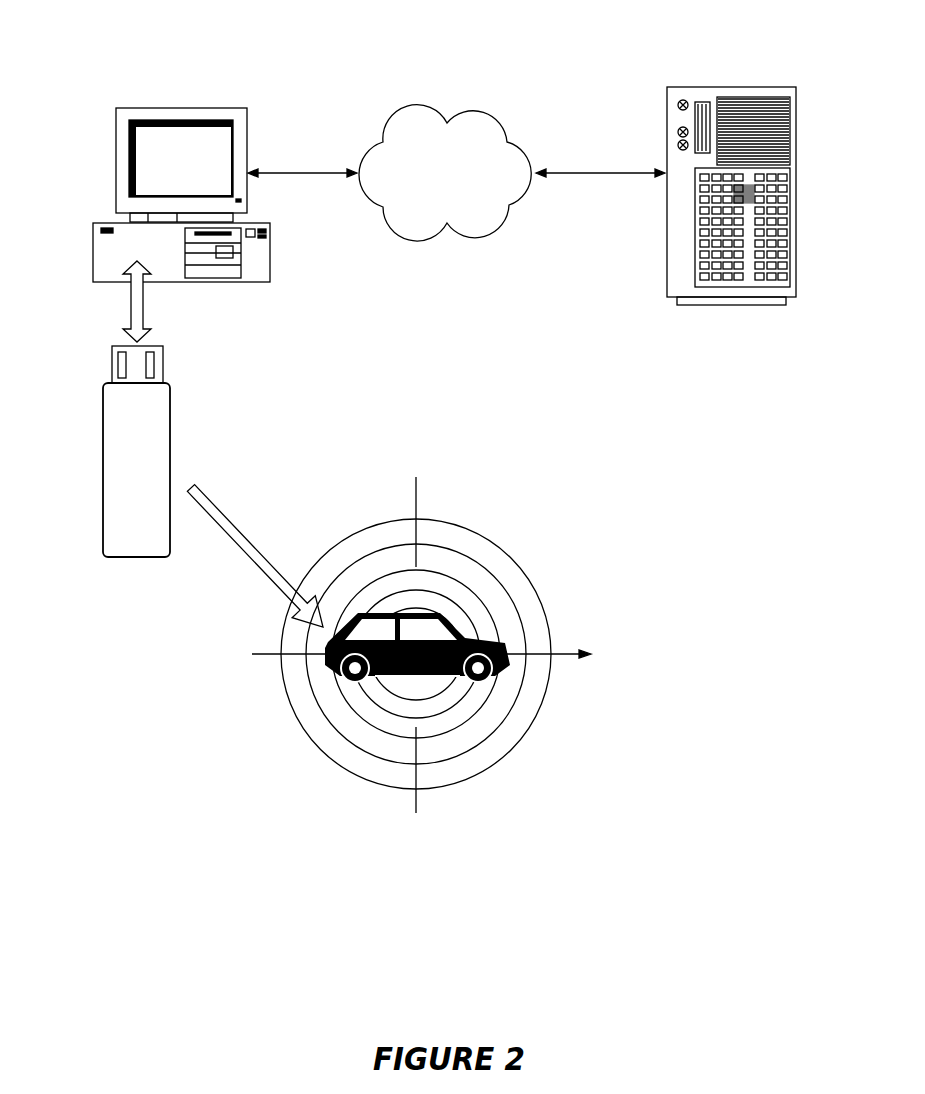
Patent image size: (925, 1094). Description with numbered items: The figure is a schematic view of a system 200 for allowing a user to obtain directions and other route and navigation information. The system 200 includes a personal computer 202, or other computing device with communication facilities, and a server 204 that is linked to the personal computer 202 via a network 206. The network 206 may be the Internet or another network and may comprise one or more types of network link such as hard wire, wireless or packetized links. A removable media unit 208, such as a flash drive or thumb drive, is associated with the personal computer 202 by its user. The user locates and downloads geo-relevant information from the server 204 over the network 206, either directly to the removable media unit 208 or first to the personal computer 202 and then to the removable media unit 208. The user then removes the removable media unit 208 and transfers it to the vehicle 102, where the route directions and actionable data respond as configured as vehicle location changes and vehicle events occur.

The system 200 is at (542, 402).
The personal computer 202 is at (193, 107).
The server 204 is at (742, 87).
The network 206 is at (445, 173).
The removable media unit 208 is at (113, 502).
The vehicle 102 is at (468, 630).